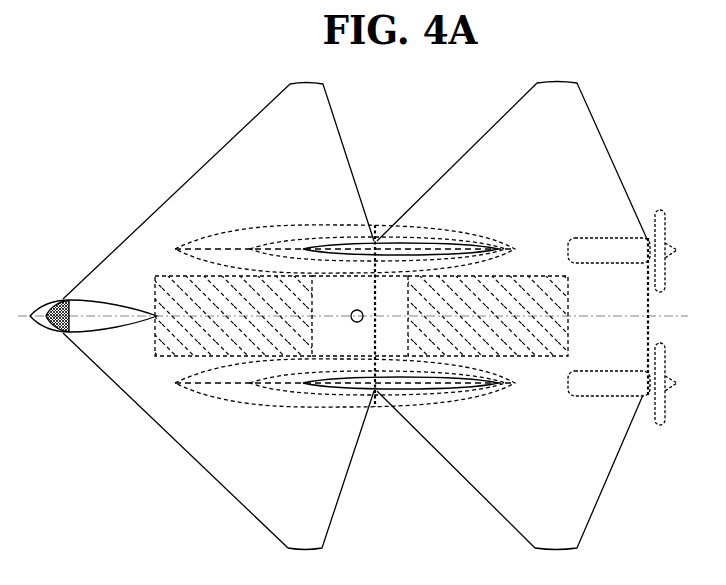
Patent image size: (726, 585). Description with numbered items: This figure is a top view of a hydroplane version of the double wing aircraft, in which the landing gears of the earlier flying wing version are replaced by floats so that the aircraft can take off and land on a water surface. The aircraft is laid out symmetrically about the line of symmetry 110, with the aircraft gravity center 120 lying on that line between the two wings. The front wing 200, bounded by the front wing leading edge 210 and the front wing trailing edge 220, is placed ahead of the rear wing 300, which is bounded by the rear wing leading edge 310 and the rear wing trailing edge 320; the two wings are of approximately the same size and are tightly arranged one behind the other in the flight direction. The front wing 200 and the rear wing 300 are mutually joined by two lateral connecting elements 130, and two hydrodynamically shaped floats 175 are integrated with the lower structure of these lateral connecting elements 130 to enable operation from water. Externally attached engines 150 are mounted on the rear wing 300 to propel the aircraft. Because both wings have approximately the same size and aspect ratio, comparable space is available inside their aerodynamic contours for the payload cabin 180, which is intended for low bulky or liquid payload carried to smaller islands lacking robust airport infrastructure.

The line of symmetry 110 is at (97, 315).
The aircraft gravity center 120 is at (358, 309).
The lateral connecting elements 130 is at (340, 388).
The externally attached engines 150 is at (613, 247).
The hydrodynamic floats 175 is at (380, 233).
The payload cabin 180 is at (178, 290).
The front wing 200 is at (223, 320).
The front wing leading edge 210 is at (107, 256).
The front wing trailing edge 220 is at (338, 498).
The rear wing 300 is at (518, 319).
The rear wing leading edge 310 is at (460, 472).
The rear wing trailing edge 320 is at (612, 475).